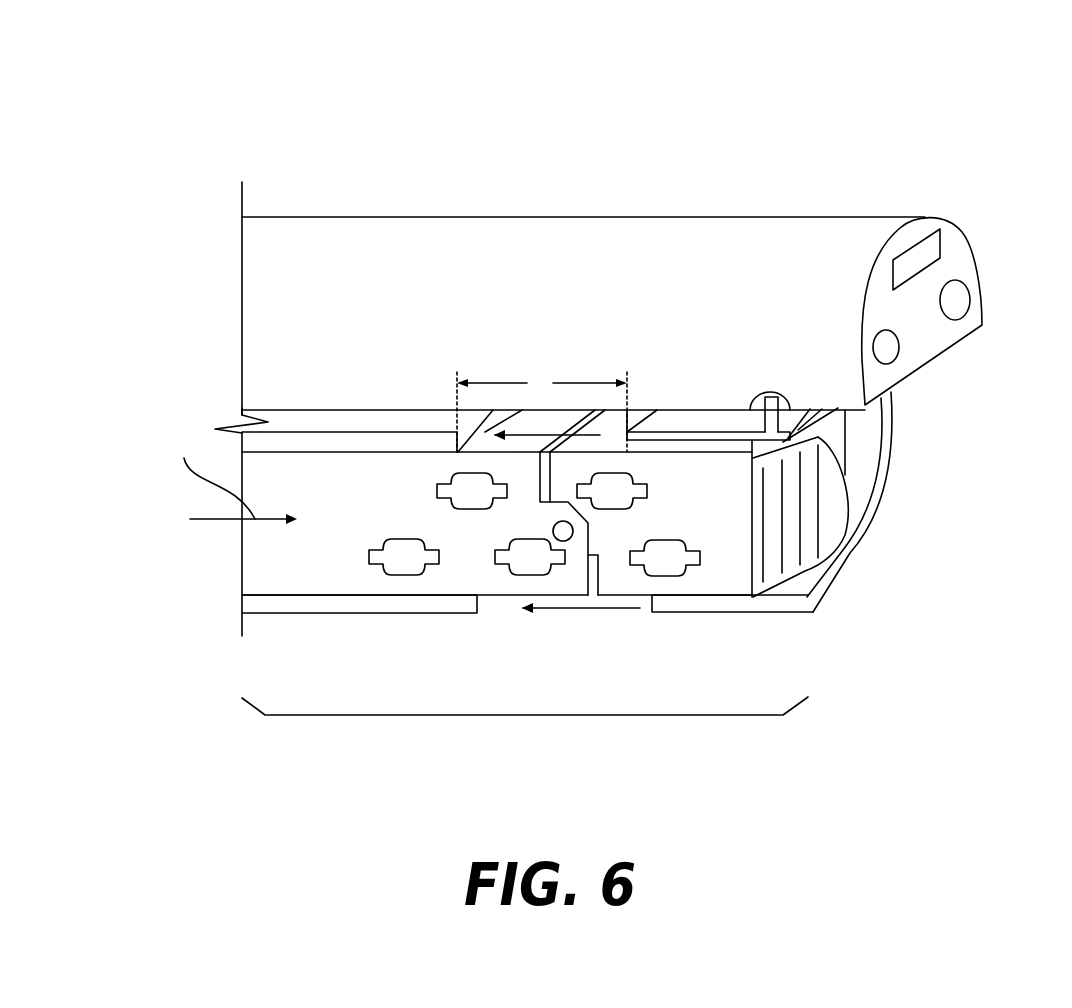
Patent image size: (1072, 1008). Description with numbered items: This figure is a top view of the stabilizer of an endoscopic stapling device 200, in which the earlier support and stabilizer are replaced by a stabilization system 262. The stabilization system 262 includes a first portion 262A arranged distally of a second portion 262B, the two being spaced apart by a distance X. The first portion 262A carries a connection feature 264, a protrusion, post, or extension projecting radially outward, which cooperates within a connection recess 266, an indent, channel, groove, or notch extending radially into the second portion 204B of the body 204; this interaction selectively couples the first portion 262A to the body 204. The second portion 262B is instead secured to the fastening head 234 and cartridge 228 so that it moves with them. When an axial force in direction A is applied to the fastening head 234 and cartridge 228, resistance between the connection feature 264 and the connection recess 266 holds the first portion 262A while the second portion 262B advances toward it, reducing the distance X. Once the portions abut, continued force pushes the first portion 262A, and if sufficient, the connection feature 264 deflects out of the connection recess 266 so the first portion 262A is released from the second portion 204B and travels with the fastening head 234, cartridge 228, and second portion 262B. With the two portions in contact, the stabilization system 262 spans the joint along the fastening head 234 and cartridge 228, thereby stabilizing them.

The endoscopic stapling device 200 is at (676, 88).
The body 204 is at (406, 178).
The second portion of body 204B is at (837, 243).
The fastening head 234 is at (346, 483).
The connection recess 266 is at (755, 395).
The connection feature 264 is at (800, 413).
The cartridge 228 is at (720, 521).
The stabilization system 262 is at (523, 715).
The first portion 262A is at (777, 613).
The second portion 262B is at (383, 613).